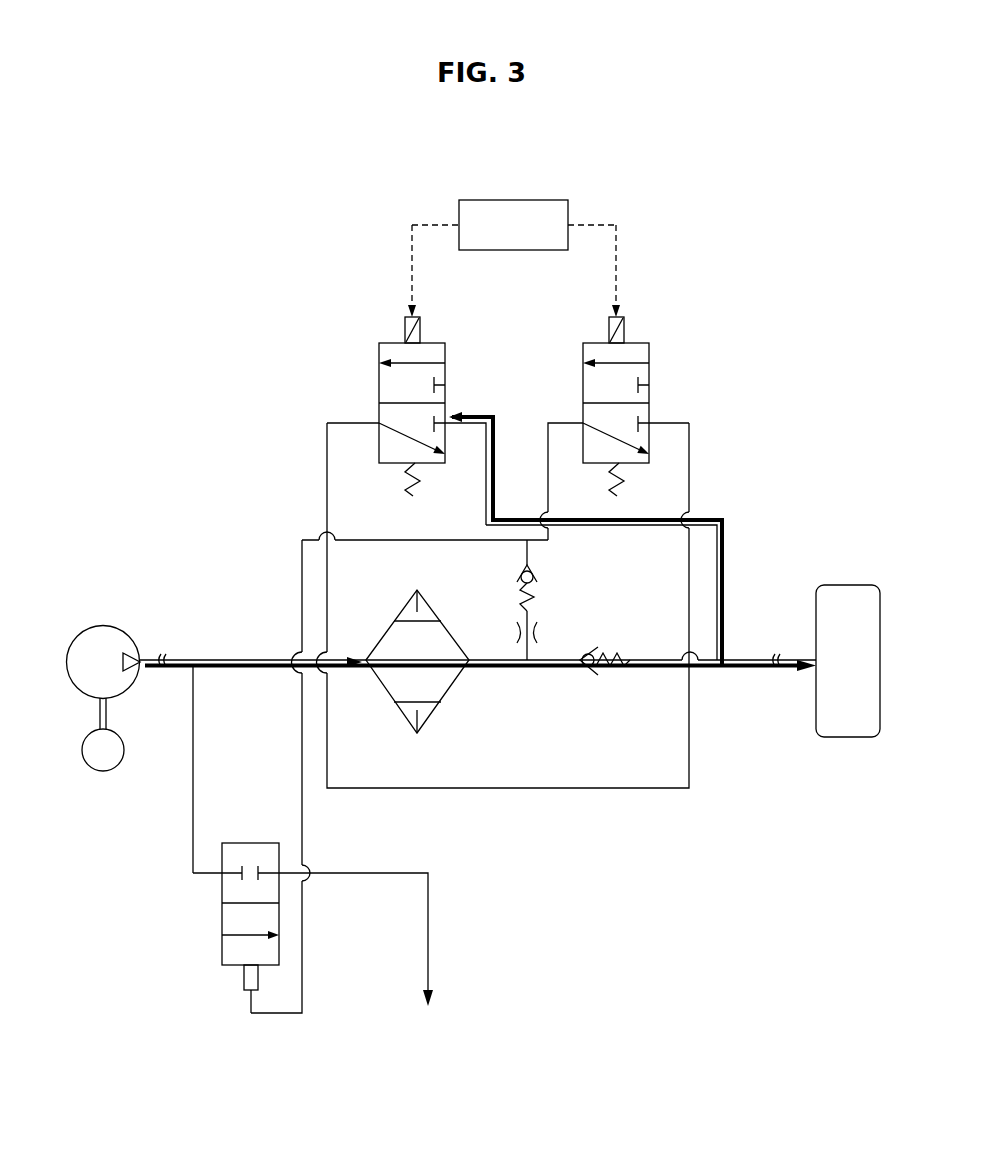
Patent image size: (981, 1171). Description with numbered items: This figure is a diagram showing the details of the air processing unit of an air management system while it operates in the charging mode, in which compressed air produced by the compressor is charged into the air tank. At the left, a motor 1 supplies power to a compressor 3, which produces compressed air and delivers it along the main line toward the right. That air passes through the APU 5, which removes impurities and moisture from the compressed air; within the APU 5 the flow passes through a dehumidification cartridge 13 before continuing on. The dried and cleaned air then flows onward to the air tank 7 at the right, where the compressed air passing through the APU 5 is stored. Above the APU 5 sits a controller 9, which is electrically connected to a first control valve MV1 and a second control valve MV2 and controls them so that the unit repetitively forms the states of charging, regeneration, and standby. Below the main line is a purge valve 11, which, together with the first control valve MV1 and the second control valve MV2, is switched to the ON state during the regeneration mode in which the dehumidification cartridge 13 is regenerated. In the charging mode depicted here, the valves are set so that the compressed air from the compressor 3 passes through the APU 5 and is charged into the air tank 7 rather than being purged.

The motor 1 is at (103, 771).
The compressor 3 is at (103, 625).
The APU 5 is at (600, 808).
The air tank 7 is at (848, 737).
The controller 9 is at (514, 200).
The purge valve 11 is at (222, 945).
The dehumidification cartridge 13 is at (433, 712).
The first control valve MV1 is at (383, 343).
The second control valve MV2 is at (643, 343).